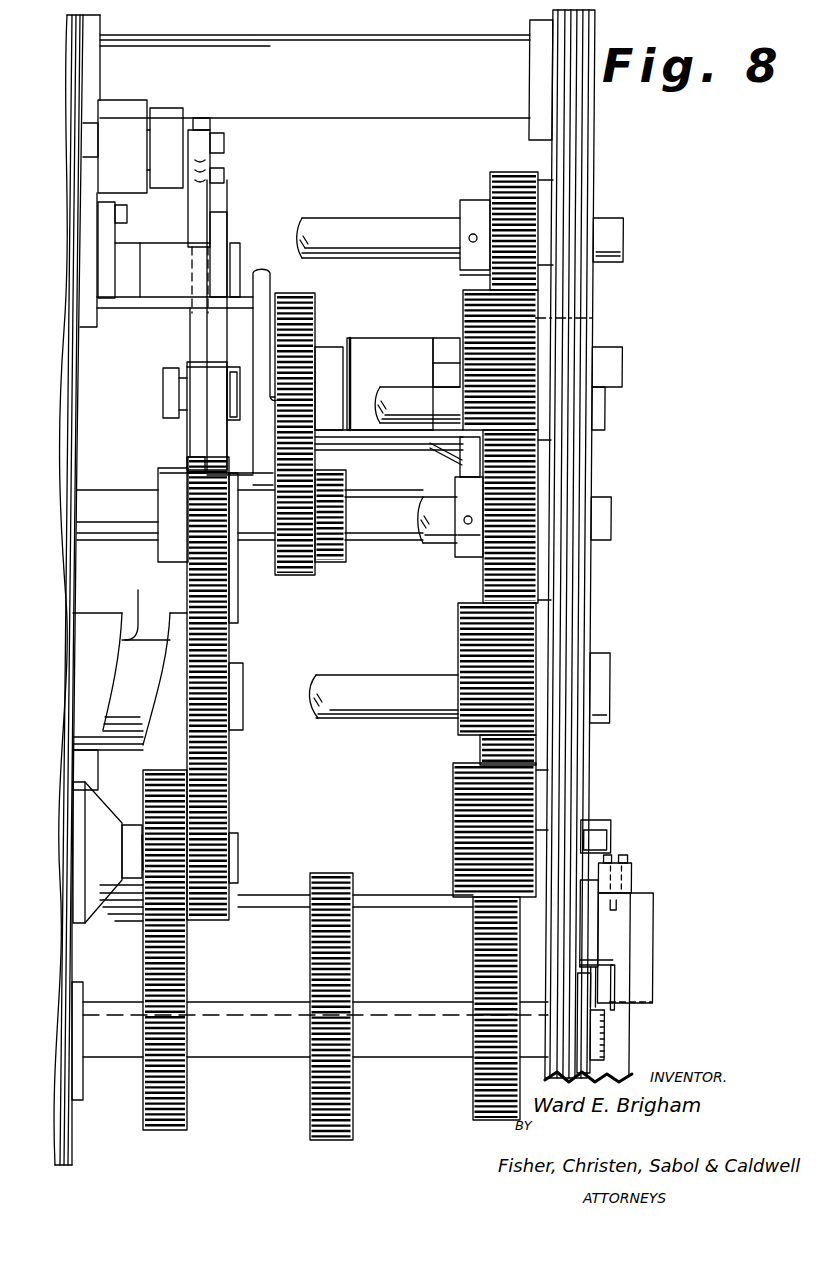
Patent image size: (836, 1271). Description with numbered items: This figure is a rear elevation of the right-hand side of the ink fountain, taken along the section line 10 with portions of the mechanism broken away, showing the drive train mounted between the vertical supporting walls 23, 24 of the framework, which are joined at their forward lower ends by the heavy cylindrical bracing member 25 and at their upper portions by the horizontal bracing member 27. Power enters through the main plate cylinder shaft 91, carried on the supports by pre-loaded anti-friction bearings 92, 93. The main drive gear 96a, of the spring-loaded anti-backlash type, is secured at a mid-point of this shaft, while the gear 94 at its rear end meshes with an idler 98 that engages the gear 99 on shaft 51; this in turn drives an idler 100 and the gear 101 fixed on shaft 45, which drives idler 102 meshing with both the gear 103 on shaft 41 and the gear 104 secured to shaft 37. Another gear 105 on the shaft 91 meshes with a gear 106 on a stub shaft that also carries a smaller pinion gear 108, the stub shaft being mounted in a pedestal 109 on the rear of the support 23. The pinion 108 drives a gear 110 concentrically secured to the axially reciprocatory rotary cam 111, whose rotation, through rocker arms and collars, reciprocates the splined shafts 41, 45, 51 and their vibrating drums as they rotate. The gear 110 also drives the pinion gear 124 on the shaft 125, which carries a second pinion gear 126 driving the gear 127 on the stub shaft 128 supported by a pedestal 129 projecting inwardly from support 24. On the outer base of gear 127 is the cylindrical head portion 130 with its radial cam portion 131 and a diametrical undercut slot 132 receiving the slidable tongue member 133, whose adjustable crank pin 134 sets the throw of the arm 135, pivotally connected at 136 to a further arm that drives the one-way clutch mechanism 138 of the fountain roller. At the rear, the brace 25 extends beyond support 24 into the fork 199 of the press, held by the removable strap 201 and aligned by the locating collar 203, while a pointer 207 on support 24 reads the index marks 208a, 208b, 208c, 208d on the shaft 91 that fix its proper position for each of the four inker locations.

The section line 10 is at (276, 330).
The vertical supporting wall 23 is at (100, 27).
The vertical supporting wall 24 is at (596, 152).
The cylindrical bracing member 25 is at (283, 968).
The horizontal bracing member 27 is at (372, 97).
The shaft 37 is at (410, 215).
The shaft 41 is at (415, 426).
The shaft 45 is at (612, 540).
The shaft 51 is at (353, 717).
The main plate cylinder shaft 91 is at (240, 1047).
The pre-loaded anti-friction bearing 92 is at (78, 1100).
The pre-loaded anti-friction bearing 93 is at (603, 988).
The gear 94 is at (473, 1090).
The main drive gear 96a is at (313, 1120).
The idler 98 is at (453, 837).
The gear 99 is at (540, 752).
The idler 100 is at (535, 645).
The gear 101 is at (482, 583).
The idler 102 is at (463, 327).
The gear 103 is at (596, 318).
The gear 104 is at (490, 182).
The gear 105 is at (163, 1120).
The gear 106 is at (132, 923).
The pinion gear 108 is at (229, 823).
The pedestal 109 is at (100, 868).
The gear 110 is at (230, 770).
The axially reciprocatory rotary cam 111 is at (137, 618).
The pinion gear 124 is at (316, 562).
The shaft 125 is at (420, 572).
The pinion gear 126 is at (241, 544).
The gear 127 is at (323, 317).
The stub shaft 128 is at (340, 338).
The pedestal 129 is at (375, 337).
The cylindrical head portion 130 is at (242, 307).
The cam portion 131 is at (274, 266).
The undercut slot 132 is at (228, 370).
The slidable tongue member 133 is at (233, 398).
The crank pin 134 is at (160, 398).
The arm 135 is at (212, 200).
The pivotal connection 136 is at (224, 150).
The one-way clutch mechanism 138 is at (146, 86).
The fork 199 is at (612, 1030).
The removable strap 201 is at (643, 877).
The locating collar 203 is at (597, 880).
The pointer 207 is at (620, 958).
The index mark 208a is at (618, 1061).
The index mark 208b is at (613, 1054).
The index mark 208c is at (613, 1043).
The index mark 208d is at (613, 1018).